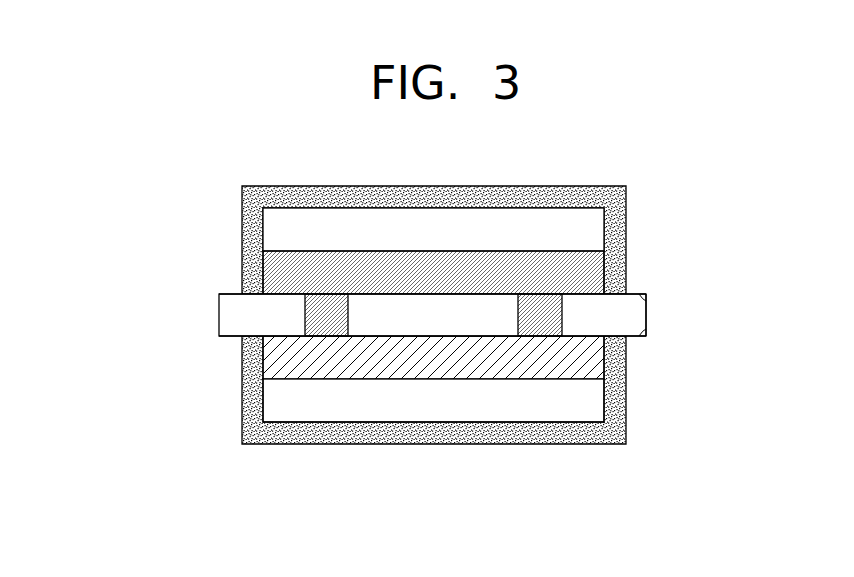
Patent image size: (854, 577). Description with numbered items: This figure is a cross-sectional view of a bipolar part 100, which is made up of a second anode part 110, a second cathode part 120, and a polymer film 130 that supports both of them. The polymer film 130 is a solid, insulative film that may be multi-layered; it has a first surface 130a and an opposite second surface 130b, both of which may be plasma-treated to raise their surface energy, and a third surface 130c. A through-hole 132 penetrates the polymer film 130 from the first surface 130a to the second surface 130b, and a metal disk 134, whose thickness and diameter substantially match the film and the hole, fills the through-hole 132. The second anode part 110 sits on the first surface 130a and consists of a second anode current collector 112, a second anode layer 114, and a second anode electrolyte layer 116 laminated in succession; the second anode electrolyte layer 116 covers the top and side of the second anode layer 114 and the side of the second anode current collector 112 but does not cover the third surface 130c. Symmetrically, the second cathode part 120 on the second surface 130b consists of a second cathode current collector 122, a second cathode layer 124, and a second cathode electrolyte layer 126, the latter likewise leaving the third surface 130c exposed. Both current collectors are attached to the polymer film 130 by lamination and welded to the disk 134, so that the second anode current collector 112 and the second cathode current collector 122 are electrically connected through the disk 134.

The bipolar part 100 is at (99, 230).
The second anode part 110 is at (157, 190).
The second anode current collector 112 is at (265, 270).
The second anode layer 114 is at (265, 233).
The second anode electrolyte layer 116 is at (248, 199).
The second cathode part 120 is at (157, 348).
The second cathode current collector 122 is at (270, 357).
The second cathode layer 124 is at (268, 392).
The second cathode electrolyte layer 126 is at (249, 431).
The polymer film 130 is at (233, 317).
The first surface 130a is at (649, 301).
The second surface 130b is at (649, 330).
The third surface 130c is at (647, 316).
The through-hole 132 is at (535, 336).
The disk 134 is at (552, 336).